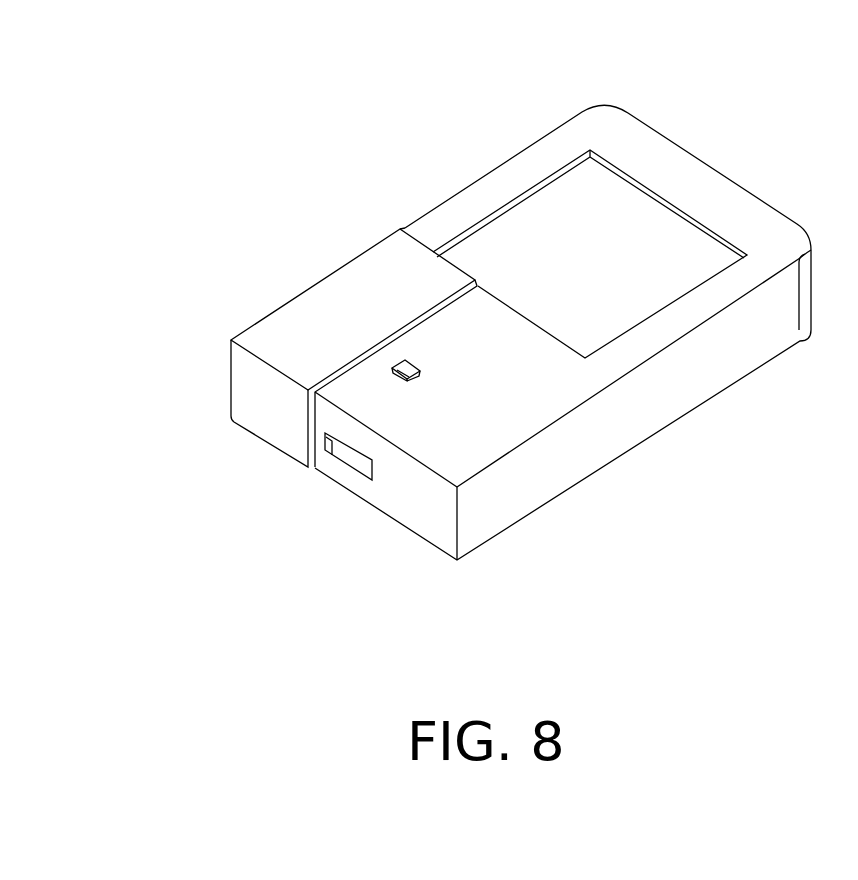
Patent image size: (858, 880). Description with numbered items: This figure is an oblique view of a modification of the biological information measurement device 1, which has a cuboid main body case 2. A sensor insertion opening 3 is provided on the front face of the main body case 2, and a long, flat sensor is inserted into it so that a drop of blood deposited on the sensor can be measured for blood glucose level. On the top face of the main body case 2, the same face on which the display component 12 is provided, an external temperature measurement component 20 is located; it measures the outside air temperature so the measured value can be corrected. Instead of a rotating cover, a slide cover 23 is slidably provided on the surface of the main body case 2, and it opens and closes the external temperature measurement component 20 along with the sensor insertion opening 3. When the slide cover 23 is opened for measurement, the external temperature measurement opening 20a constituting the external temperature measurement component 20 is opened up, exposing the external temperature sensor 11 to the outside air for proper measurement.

The biological information measurement device 1 is at (451, 317).
The main body case 2 is at (440, 205).
The sensor insertion opening 3 is at (353, 462).
The external temperature sensor 11 is at (415, 380).
The display component 12 is at (562, 183).
The external temperature measurement component 20 is at (430, 368).
The external temperature measurement opening 20a is at (420, 375).
The slide cover 23 is at (283, 330).